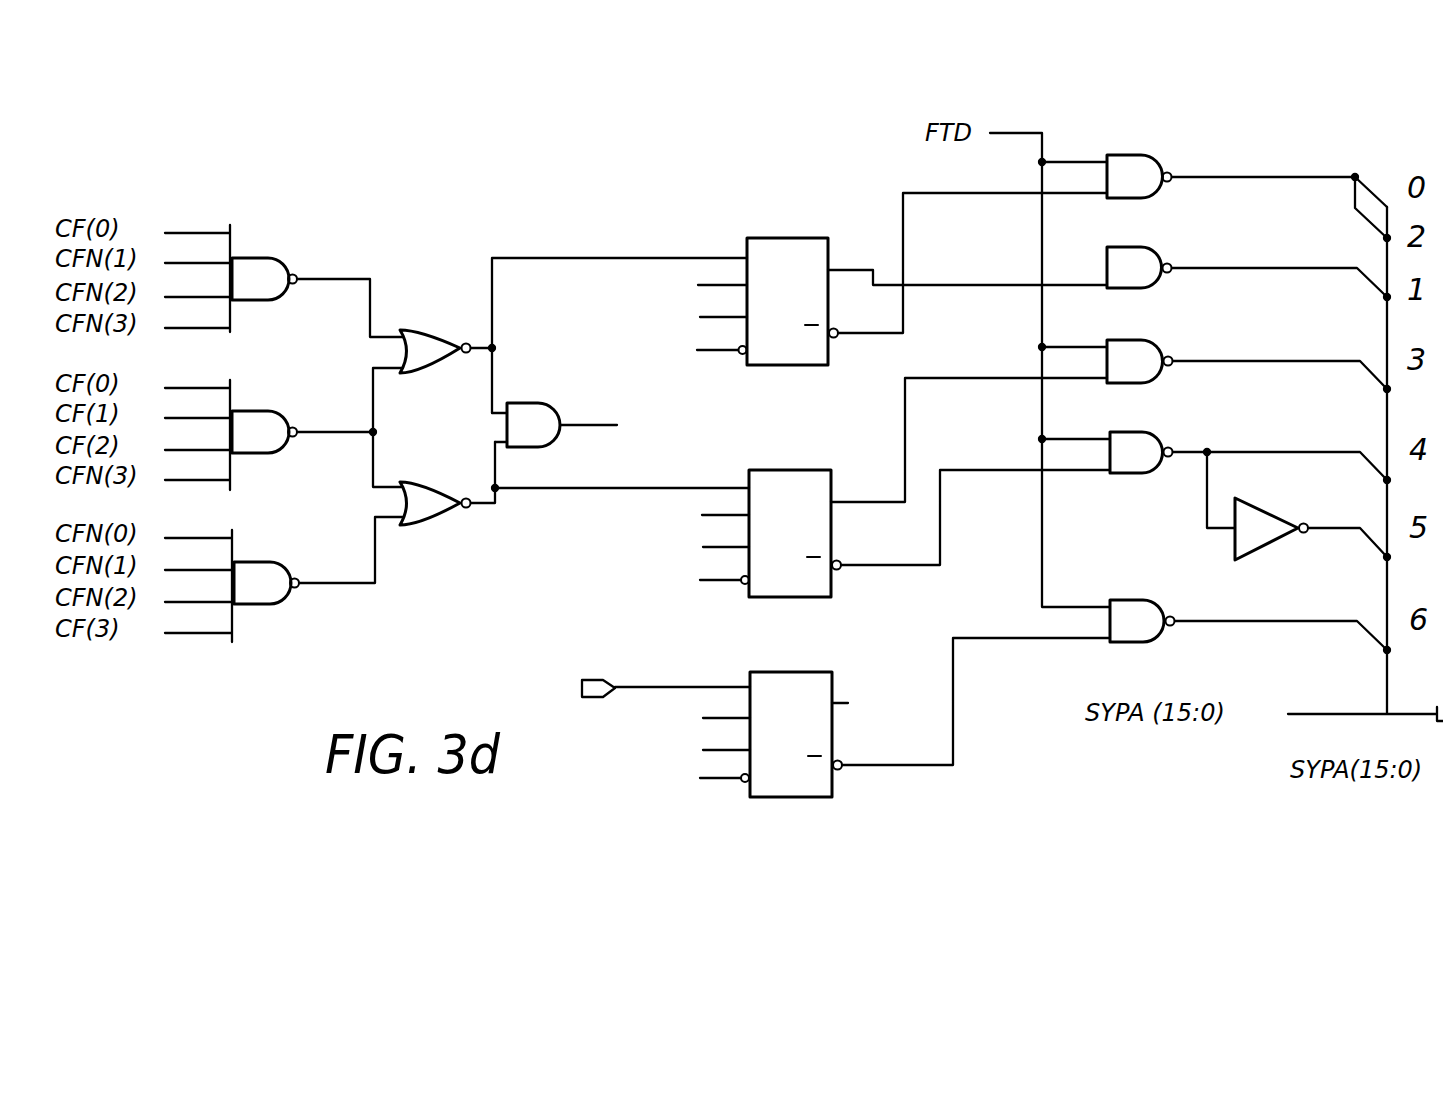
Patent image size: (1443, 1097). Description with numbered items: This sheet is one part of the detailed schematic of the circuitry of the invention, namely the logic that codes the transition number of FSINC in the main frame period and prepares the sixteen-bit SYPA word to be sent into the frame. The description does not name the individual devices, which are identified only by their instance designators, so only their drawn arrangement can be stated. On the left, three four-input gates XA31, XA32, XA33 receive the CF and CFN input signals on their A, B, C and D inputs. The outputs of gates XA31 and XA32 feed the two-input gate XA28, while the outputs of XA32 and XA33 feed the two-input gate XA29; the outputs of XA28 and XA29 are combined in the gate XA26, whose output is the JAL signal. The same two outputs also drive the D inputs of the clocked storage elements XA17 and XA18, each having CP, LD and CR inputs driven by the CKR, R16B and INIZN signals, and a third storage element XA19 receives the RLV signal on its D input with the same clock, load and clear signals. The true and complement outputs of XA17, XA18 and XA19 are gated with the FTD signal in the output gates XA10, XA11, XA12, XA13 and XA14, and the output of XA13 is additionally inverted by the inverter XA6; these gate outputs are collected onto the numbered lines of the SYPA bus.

The four-input NAND gate XA31 is at (284, 277).
The four-input NAND gate XA32 is at (284, 429).
The four-input NAND gate XA33 is at (284, 579).
The NOR gate XA28 is at (573, 335).
The NOR gate XA29 is at (574, 483).
The AND gate XA26 is at (579, 409).
The D flip-flop XA17 is at (852, 279).
The D flip-flop XA18 is at (855, 487).
The D flip-flop XA19 is at (812, 717).
The NAND gate XA10 is at (1247, 181).
The NAND gate XA11 is at (1247, 256).
The NAND gate XA12 is at (1247, 349).
The NAND gate XA13 is at (1248, 464).
The NAND gate XA14 is at (1248, 609).
The inverter XA6 is at (1311, 523).